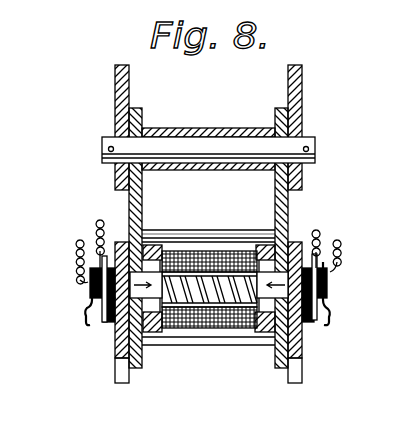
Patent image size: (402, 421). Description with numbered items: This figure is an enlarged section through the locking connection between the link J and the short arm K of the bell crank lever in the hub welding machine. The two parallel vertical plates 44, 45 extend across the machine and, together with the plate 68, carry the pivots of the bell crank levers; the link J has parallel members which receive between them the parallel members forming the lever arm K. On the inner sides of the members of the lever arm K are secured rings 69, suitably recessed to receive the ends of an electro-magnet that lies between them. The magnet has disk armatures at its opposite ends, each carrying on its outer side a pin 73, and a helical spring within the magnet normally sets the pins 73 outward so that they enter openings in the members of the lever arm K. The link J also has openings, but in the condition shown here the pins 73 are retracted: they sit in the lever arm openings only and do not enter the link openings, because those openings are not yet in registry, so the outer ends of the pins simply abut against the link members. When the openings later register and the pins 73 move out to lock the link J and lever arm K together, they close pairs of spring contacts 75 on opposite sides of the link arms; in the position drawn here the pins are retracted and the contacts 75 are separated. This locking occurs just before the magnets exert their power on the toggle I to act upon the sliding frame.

The vertical plate 44 is at (116, 224).
The vertical plate 45 is at (301, 224).
The plate 68 is at (316, 141).
The short arm of bell crank lever K is at (276, 197).
The toggle I is at (215, 335).
The ring 69 is at (163, 335).
The link J is at (115, 343).
The pin 73 is at (92, 291).
The spring contact 75 is at (88, 282).